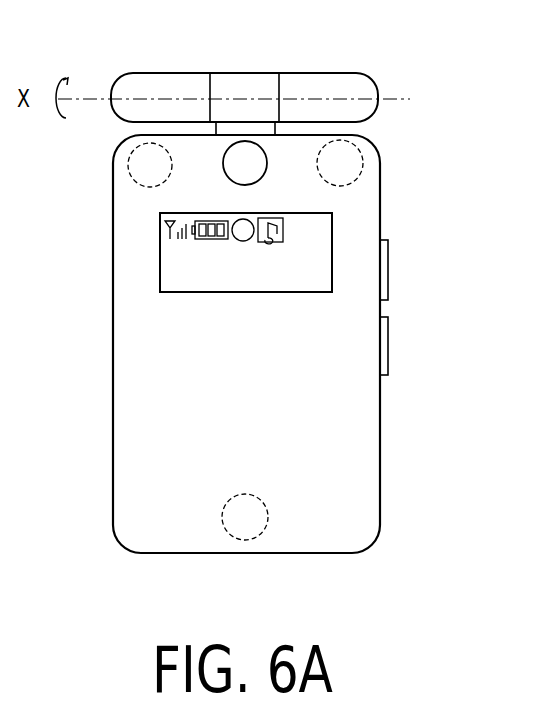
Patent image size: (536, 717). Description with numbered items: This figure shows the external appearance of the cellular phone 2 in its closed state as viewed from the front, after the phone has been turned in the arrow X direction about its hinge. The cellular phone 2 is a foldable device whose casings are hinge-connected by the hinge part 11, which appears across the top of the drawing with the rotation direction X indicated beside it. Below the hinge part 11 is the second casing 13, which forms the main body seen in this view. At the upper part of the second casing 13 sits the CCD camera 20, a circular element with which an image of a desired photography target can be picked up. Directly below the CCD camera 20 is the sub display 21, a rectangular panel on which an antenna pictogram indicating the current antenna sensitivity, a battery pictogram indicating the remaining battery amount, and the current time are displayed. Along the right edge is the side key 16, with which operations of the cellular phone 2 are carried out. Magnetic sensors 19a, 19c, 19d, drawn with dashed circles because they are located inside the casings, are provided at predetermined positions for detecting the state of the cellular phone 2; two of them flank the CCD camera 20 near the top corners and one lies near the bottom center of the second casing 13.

The cellular phone 2 is at (406, 449).
The hinge part 11 is at (356, 82).
The second casing 13 is at (113, 318).
The side key 16 is at (389, 270).
The magnetic sensor 19a is at (222, 517).
The magnetic sensor 19c is at (363, 171).
The magnetic sensor 19d is at (128, 166).
The CCD camera 20 is at (244, 141).
The sub display 21 is at (160, 251).